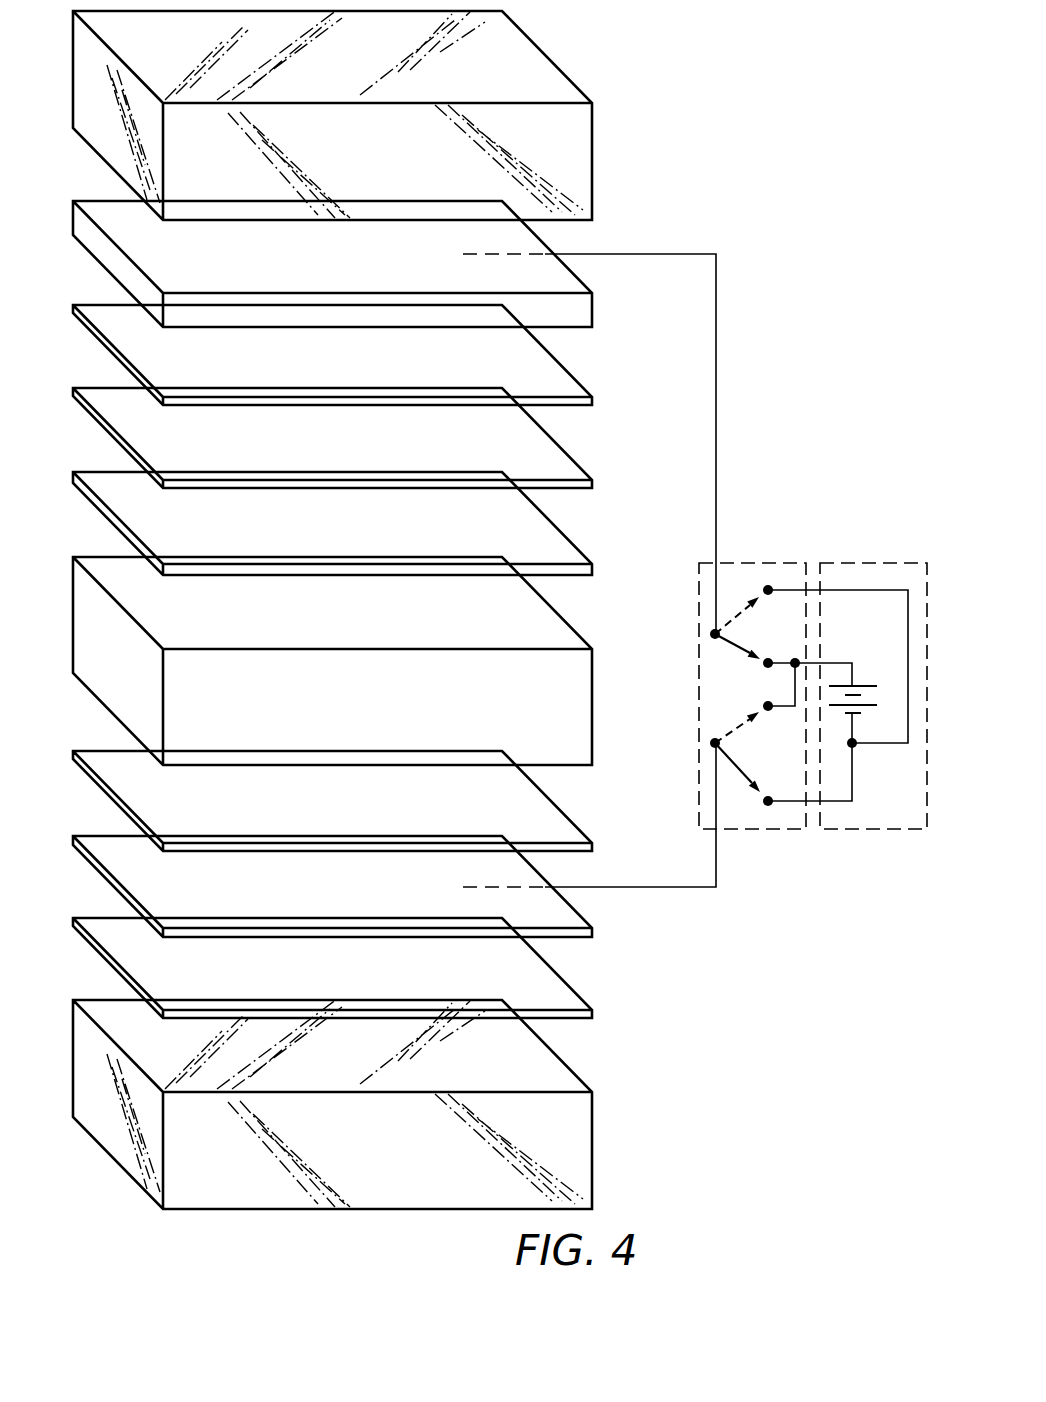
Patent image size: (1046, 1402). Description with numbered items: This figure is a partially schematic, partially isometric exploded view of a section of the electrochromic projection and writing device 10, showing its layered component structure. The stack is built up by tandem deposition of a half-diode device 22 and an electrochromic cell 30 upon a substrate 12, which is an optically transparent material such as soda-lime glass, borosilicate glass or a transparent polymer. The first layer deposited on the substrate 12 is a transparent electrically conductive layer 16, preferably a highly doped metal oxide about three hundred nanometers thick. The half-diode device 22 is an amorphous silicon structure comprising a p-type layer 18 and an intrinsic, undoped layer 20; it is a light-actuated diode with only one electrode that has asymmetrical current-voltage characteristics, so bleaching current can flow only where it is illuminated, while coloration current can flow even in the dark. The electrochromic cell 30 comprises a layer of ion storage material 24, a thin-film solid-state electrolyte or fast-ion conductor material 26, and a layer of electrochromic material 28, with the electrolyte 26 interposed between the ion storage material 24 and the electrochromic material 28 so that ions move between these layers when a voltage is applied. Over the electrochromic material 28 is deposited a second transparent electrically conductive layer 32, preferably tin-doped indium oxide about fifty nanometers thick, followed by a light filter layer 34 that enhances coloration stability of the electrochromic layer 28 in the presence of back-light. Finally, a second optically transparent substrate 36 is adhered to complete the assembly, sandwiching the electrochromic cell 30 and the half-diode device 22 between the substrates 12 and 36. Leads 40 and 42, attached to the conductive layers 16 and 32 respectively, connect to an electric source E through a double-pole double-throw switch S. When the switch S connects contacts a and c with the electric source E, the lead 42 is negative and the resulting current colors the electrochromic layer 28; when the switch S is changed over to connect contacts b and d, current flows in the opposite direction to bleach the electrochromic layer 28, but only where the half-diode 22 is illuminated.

The electrochromic projection and writing device 10 is at (763, 56).
The substrate 12 is at (103, 143).
The transparent electrically conductive layer 16 is at (88, 243).
The p-type layer 18 is at (84, 322).
The intrinsic layer 20 is at (86, 408).
The half-diode device 22 is at (349, 397).
The ion storage material 24 is at (87, 495).
The electrolyte material 26 is at (103, 684).
The electrochromic material 28 is at (87, 769).
The electrochromic cell 30 is at (354, 663).
The second transparent electrically conductive layer 32 is at (80, 853).
The light filter layer 34 is at (80, 934).
The second optically transparent substrate 36 is at (103, 1133).
The lead 40 is at (716, 355).
The lead 42 is at (656, 888).
The double-pole double-throw switch S is at (705, 560).
The electric source E is at (893, 558).
The switch contact a is at (764, 668).
The switch contact b is at (765, 588).
The switch contact c is at (766, 808).
The switch contact d is at (762, 702).